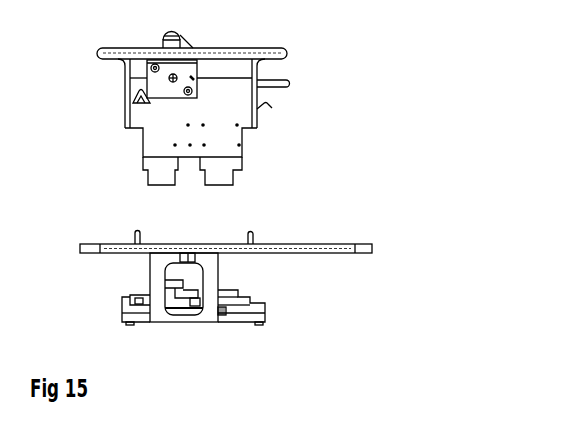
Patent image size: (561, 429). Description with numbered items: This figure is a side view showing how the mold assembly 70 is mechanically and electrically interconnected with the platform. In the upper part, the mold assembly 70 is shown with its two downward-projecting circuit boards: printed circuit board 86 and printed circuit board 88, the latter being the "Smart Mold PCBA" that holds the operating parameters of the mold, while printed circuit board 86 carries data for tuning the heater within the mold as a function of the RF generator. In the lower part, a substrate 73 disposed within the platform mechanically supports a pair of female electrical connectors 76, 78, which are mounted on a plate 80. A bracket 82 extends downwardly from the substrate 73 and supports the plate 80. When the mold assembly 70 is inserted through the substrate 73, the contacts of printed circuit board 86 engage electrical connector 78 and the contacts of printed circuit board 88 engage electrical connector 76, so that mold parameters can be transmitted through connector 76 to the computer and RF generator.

The mold assembly 70 is at (262, 106).
The printed circuit board 86 is at (150, 177).
The printed circuit board 88 is at (242, 173).
The substrate 73 is at (320, 245).
The bracket 82 is at (206, 313).
The female electrical connector 78 is at (132, 303).
The plate 80 is at (122, 317).
The female electrical connector 76 is at (250, 297).